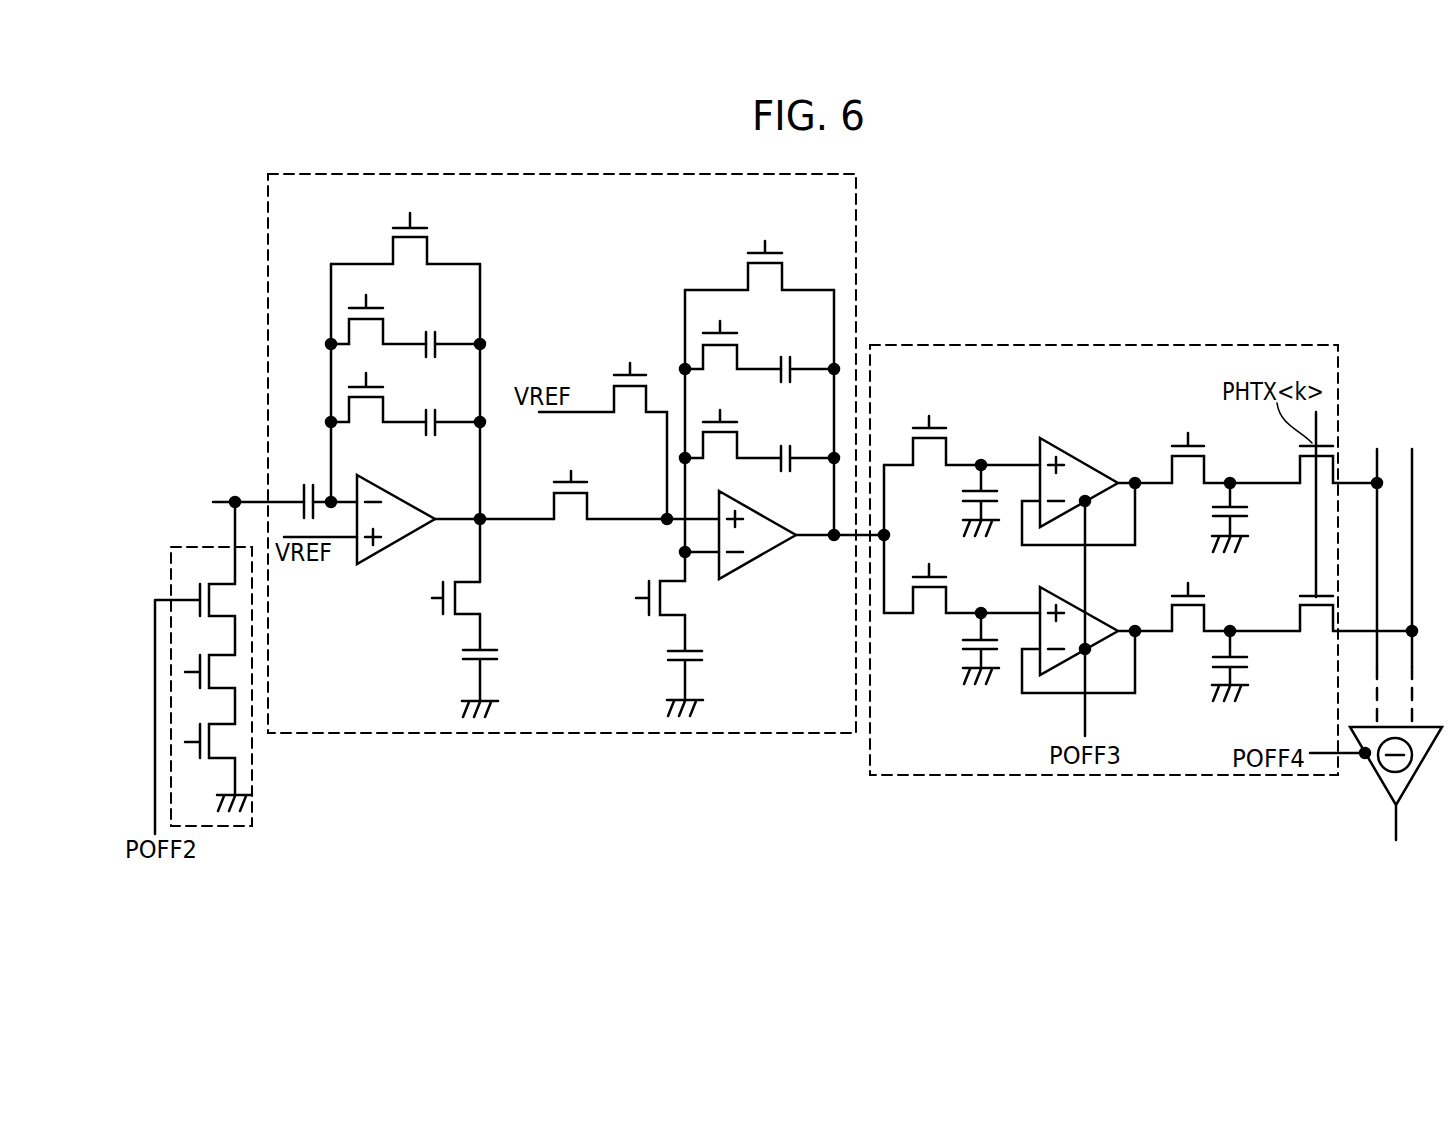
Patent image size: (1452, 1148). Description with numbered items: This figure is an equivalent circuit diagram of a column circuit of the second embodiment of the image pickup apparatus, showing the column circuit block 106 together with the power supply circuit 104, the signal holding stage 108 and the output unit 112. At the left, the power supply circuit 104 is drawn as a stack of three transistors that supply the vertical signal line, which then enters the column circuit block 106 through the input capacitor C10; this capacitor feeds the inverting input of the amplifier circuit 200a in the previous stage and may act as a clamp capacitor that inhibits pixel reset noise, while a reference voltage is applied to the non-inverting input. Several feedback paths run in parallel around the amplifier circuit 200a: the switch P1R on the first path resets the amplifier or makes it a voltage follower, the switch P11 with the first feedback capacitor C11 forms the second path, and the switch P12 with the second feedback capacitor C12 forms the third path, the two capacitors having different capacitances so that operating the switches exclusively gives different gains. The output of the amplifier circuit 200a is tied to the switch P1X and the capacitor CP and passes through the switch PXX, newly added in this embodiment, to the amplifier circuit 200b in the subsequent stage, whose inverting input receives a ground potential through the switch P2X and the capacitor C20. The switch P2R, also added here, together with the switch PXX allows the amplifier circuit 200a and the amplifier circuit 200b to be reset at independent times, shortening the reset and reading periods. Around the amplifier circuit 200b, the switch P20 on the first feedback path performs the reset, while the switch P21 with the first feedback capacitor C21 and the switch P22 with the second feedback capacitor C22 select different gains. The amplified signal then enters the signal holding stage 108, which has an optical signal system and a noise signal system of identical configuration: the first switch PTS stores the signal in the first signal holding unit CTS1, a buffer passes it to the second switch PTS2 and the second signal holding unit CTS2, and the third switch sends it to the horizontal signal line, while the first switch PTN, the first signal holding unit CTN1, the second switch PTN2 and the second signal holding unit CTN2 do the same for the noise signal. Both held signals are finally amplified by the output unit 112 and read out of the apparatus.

The power supply circuit 104 is at (252, 763).
The column circuit block 106 is at (653, 733).
The sample and hold circuit 108 is at (925, 775).
The output unit 112 is at (1410, 777).
The amplifier circuit in the previous stage 200a is at (380, 555).
The amplifier circuit in the subsequent stage 200b is at (758, 560).
The input capacitor C10 is at (311, 485).
The first feedback capacitor C11 is at (431, 417).
The second feedback capacitor C12 is at (431, 340).
The switch P11 is at (369, 412).
The switch P12 is at (369, 334).
The switch P1R is at (413, 254).
The switch transistor P1X is at (485, 603).
The capacitor CP is at (497, 653).
The switch PXX is at (574, 509).
The switch P2R is at (633, 402).
The switch P20 is at (768, 280).
The switch P21 is at (723, 448).
The switch P22 is at (723, 359).
The first feedback capacitor C21 is at (786, 452).
The second feedback capacitor C22 is at (786, 365).
The switch P2X is at (686, 603).
The capacitor C20 is at (703, 653).
The first switch PTS is at (932, 455).
The first signal holding unit CTS1 is at (997, 495).
The second switch PTS2 is at (1185, 485).
The second signal holding unit CTS2 is at (1247, 512).
The first switch PTN is at (932, 603).
The first signal holding unit CTN1 is at (997, 645).
The second switch PTN2 is at (1185, 633).
The second signal holding unit CTN2 is at (1250, 660).